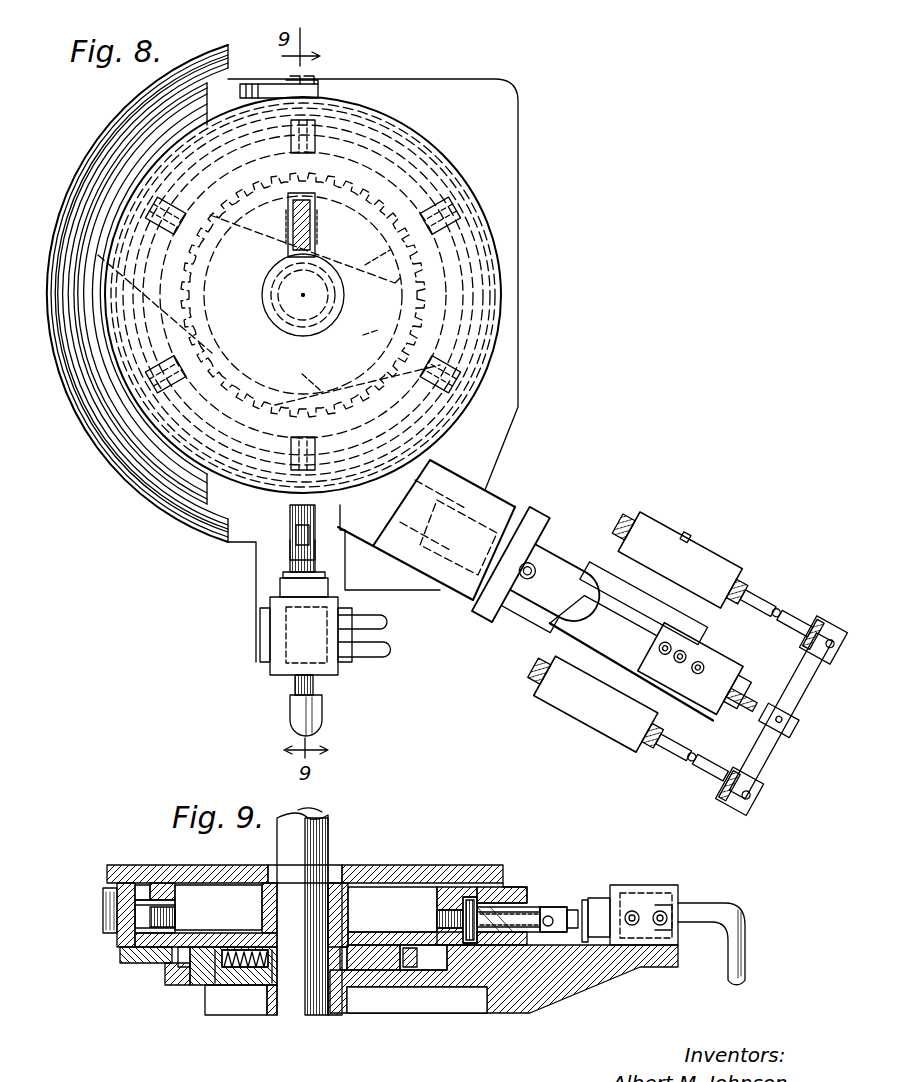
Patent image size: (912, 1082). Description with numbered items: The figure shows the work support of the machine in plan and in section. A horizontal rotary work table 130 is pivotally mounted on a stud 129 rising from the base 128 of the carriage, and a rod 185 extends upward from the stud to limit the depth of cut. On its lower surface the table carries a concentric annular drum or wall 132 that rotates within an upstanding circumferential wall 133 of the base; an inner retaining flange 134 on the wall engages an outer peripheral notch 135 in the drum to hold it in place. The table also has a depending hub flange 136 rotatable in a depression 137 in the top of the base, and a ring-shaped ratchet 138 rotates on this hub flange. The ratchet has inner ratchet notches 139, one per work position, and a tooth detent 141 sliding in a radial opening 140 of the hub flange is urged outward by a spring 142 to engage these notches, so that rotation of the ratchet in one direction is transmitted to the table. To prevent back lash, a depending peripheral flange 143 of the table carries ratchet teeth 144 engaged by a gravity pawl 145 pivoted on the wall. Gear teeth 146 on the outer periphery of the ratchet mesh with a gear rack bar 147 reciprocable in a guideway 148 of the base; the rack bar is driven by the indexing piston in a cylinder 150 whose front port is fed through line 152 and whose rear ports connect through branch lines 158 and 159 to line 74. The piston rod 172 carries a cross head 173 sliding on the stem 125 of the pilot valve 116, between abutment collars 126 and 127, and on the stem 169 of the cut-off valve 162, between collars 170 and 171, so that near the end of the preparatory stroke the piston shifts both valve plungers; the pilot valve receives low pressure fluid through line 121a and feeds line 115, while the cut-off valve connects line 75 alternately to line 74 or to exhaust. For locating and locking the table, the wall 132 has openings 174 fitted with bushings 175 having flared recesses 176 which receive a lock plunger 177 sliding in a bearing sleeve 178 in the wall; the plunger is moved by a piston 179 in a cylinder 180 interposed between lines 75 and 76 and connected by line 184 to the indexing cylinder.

In FIG. 8, the line 74 is at (562, 712).
In FIG. 8, the line 75 is at (620, 680).
In FIG. 9, the line 75 is at (745, 968).
In FIG. 8, the line 76 is at (372, 660).
In FIG. 8, the line 115 is at (672, 588).
In FIG. 8, the pilot valve 116 is at (720, 547).
In FIG. 8, the line 121a is at (683, 524).
In FIG. 8, the stem 125 is at (780, 614).
In FIG. 8, the abutment collar 126 is at (755, 596).
In FIG. 8, the abutment collar 127 is at (825, 660).
In FIG. 9, the base 128 is at (348, 1000).
In FIG. 8, the stud 129 is at (318, 292).
In FIG. 9, the stud 129 is at (330, 862).
In FIG. 8, the rotary work table 130 is at (400, 146).
In FIG. 9, the rotary work table 130 is at (402, 868).
In FIG. 9, the annular drum or wall 132 is at (172, 900).
In FIG. 9, the circumferential wall 133 is at (120, 950).
In FIG. 9, the retaining flange 134 is at (140, 885).
In FIG. 9, the peripheral notch 135 is at (175, 880).
In FIG. 9, the hub flange 136 is at (405, 980).
In FIG. 9, the depression 137 is at (378, 1000).
In FIG. 8, the ratchet 138 is at (420, 300).
In FIG. 9, the ratchet 138 is at (200, 990).
In FIG. 8, the ratchet notches 139 is at (470, 254).
In FIG. 8, the radial opening 140 is at (335, 215).
In FIG. 8, the tooth detent 141 is at (295, 236).
In FIG. 9, the tooth detent 141 is at (225, 992).
In FIG. 8, the spring 142 is at (295, 252).
In FIG. 9, the spring 142 is at (258, 992).
In FIG. 9, the peripheral flange 143 is at (505, 880).
In FIG. 8, the ratchet teeth 144 is at (482, 210).
In FIG. 9, the ratchet teeth 144 is at (512, 896).
In FIG. 9, the gravity pawl 145 is at (105, 918).
In FIG. 8, the gear teeth 146 is at (415, 328).
In FIG. 9, the gear teeth 146 is at (178, 975).
In FIG. 8, the gear rack bar 147 is at (440, 470).
In FIG. 8, the guideway 148 is at (215, 420).
In FIG. 8, the cylinder 150 is at (575, 566).
In FIG. 8, the line 152 is at (508, 622).
In FIG. 8, the branch line 158 is at (696, 670).
In FIG. 8, the branch line 159 is at (676, 658).
In FIG. 8, the cut-off valve 162 is at (604, 745).
In FIG. 8, the stem 169 is at (682, 768).
In FIG. 8, the abutment collar 170 is at (660, 752).
In FIG. 8, the abutment collar 171 is at (745, 805).
In FIG. 8, the rod 172 is at (740, 686).
In FIG. 8, the cross head 173 is at (768, 745).
In FIG. 8, the openings 174 is at (452, 236).
In FIG. 9, the openings 174 is at (436, 920).
In FIG. 8, the bushing 175 is at (500, 322).
In FIG. 9, the bushing 175 is at (470, 895).
In FIG. 8, the flared recess or seat 176 is at (492, 358).
In FIG. 9, the flared recess or seat 176 is at (455, 1000).
In FIG. 8, the lock plunger 177 is at (290, 530).
In FIG. 9, the lock plunger 177 is at (512, 935).
In FIG. 9, the bearing sleeve 178 is at (540, 902).
In FIG. 9, the piston 179 is at (668, 895).
In FIG. 8, the cylinder 180 is at (272, 642).
In FIG. 9, the cylinder 180 is at (640, 885).
In FIG. 8, the line 184 is at (662, 642).
In FIG. 9, the rod 185 is at (325, 820).